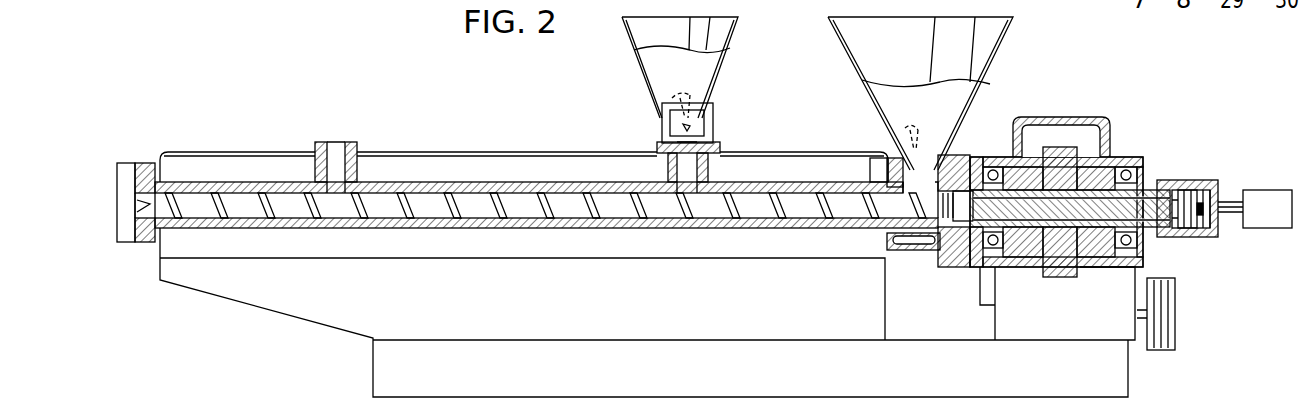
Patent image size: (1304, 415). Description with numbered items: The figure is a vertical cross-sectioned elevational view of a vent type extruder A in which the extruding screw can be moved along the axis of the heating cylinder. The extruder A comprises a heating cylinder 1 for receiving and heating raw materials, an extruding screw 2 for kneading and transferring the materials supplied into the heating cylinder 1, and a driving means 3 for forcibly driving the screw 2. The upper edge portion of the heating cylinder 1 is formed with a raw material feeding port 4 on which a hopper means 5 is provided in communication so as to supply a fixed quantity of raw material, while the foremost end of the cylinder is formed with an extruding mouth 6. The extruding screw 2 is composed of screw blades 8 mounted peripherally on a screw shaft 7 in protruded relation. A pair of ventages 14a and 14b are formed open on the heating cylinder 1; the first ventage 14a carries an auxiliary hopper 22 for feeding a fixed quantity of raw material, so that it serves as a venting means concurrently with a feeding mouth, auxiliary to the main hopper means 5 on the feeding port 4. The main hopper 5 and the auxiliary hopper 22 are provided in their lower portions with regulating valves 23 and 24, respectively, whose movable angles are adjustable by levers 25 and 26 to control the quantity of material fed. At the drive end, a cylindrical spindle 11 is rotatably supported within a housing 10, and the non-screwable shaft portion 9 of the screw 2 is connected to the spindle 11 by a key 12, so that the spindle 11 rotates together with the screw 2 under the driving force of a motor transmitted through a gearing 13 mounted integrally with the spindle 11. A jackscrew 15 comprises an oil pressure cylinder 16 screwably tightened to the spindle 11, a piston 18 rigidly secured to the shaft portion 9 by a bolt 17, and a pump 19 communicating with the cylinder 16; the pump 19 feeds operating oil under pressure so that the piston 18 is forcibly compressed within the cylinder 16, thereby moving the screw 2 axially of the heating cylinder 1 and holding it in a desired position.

The vent type extruder A is at (254, 82).
The heating cylinder 1 is at (330, 230).
The extruding screw 2 is at (392, 212).
The driving means 3 is at (1057, 320).
The raw material feeding port 4 is at (930, 165).
The hopper means 5 is at (1000, 43).
The extruding mouth 6 is at (137, 238).
The screw shaft 7 is at (560, 208).
The screw blades 8 is at (488, 214).
The non-screwable shaft portion 9 is at (1095, 228).
The housing 10 is at (1083, 120).
The cylindrical spindle 11 is at (1108, 145).
The key 12 is at (1038, 242).
The gearing 13 is at (1058, 146).
The first ventage 14a is at (687, 170).
The second ventage 14b is at (333, 141).
The jackscrew 15 is at (1217, 164).
The oil pressure cylinder 16 is at (1182, 180).
The bolt 17 is at (1208, 234).
The piston 18 is at (1184, 238).
The pump 19 is at (1277, 222).
The auxiliary hopper 22 is at (640, 37).
The regulating valve 23 is at (898, 148).
The regulating valve 24 is at (700, 125).
The lever 25 is at (905, 130).
The lever 26 is at (692, 95).